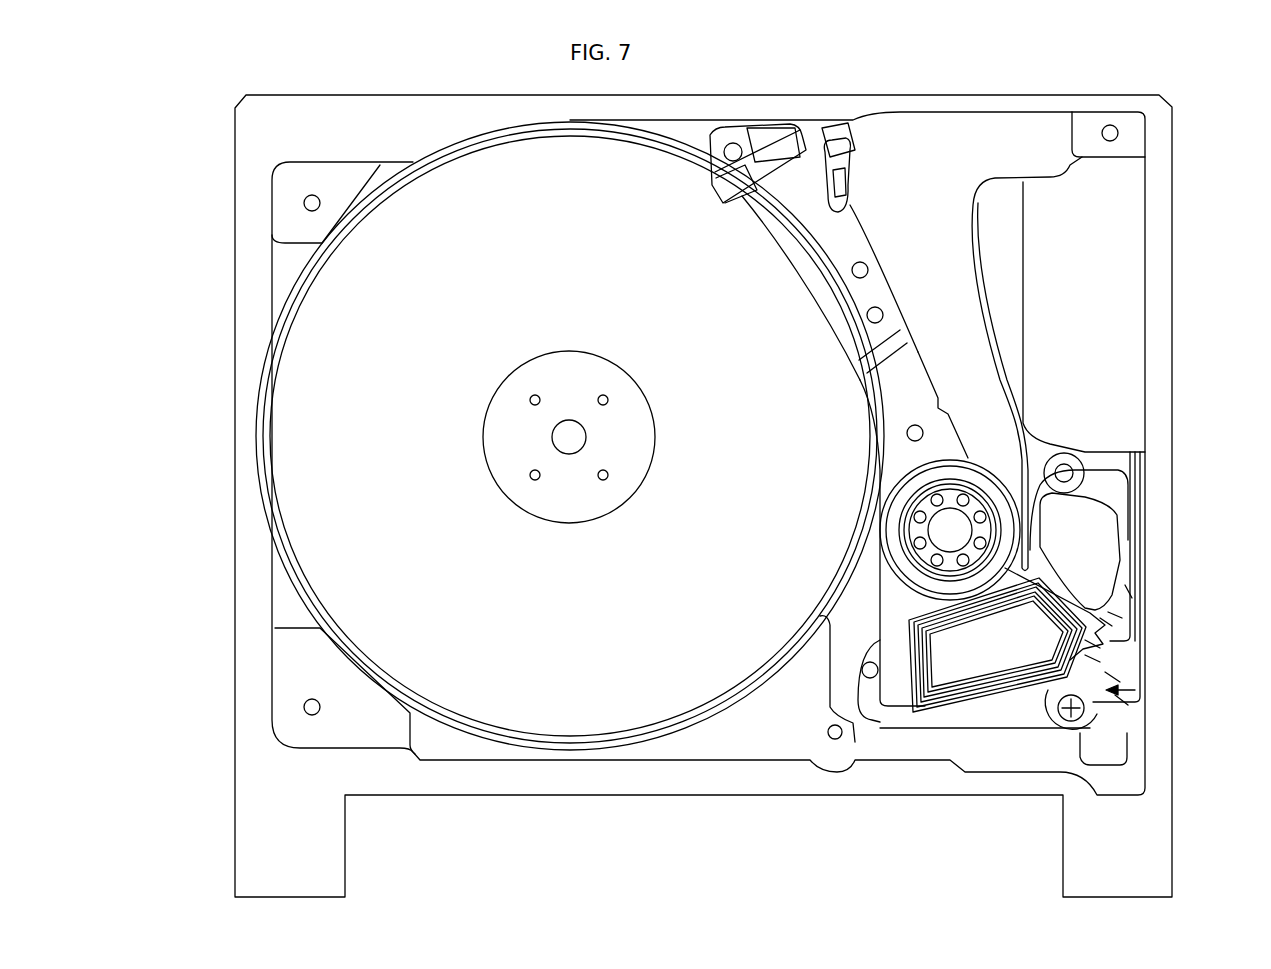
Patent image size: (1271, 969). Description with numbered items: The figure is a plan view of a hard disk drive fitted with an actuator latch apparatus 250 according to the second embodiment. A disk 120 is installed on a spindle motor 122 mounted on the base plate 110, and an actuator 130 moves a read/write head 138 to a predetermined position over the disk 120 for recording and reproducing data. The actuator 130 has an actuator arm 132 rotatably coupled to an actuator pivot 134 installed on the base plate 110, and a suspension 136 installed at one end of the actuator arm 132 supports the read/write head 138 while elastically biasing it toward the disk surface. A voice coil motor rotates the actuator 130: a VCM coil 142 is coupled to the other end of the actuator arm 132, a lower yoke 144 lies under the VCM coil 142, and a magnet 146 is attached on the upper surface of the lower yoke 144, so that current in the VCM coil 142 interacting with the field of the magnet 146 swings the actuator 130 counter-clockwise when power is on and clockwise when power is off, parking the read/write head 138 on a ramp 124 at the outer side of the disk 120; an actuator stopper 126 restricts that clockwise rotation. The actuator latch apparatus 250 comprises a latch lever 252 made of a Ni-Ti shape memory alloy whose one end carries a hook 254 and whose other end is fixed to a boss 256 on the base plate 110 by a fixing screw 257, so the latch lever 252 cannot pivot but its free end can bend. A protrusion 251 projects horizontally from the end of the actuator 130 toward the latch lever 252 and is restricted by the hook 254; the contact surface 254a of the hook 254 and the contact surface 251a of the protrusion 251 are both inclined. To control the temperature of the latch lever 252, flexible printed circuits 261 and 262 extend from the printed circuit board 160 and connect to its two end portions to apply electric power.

The base plate 110 is at (614, 775).
The disk 120 is at (502, 705).
The spindle motor 122 is at (505, 467).
The ramp 124 is at (772, 160).
The actuator stopper 126 is at (850, 722).
The actuator 130 is at (866, 596).
The actuator arm 132 is at (935, 398).
The actuator pivot 134 is at (955, 525).
The suspension 136 is at (873, 292).
The read/write head 138 is at (837, 198).
The VCM coil 142 is at (917, 707).
The lower yoke 144 is at (1120, 490).
The magnet 146 is at (1107, 540).
The printed circuit board 160 is at (1100, 290).
The actuator latch apparatus 250 is at (1143, 697).
The protrusion 251 is at (1090, 643).
The contact surface of the protrusion 251a is at (1113, 677).
The latch lever 252 is at (1090, 658).
The hook 254 is at (1115, 617).
The contact surface of the hook 254a is at (1130, 593).
The boss 256 is at (1070, 733).
The fixing screw 257 is at (1043, 717).
The flexible printed circuit 261 is at (1107, 620).
The flexible printed circuit 262 is at (1125, 700).